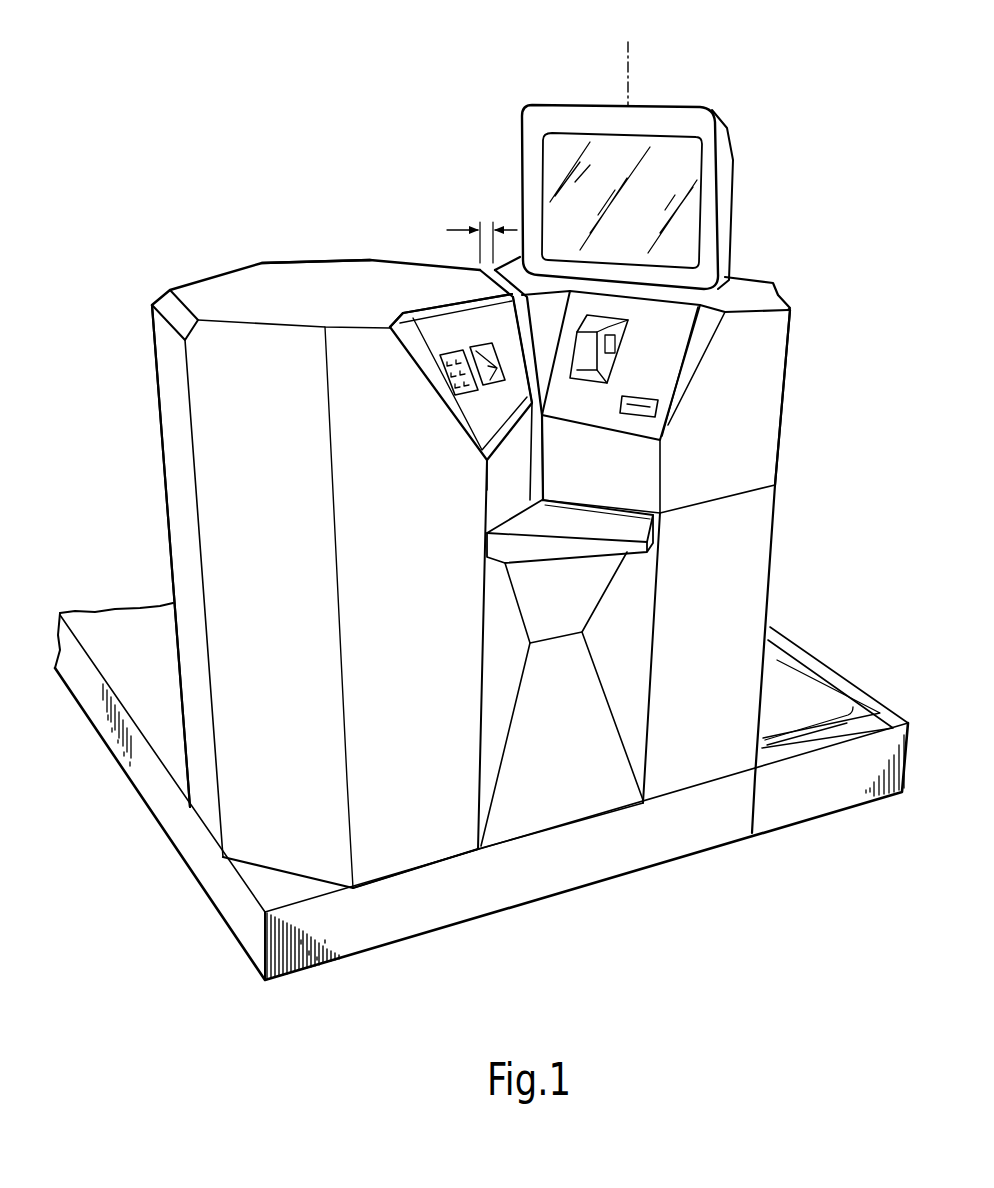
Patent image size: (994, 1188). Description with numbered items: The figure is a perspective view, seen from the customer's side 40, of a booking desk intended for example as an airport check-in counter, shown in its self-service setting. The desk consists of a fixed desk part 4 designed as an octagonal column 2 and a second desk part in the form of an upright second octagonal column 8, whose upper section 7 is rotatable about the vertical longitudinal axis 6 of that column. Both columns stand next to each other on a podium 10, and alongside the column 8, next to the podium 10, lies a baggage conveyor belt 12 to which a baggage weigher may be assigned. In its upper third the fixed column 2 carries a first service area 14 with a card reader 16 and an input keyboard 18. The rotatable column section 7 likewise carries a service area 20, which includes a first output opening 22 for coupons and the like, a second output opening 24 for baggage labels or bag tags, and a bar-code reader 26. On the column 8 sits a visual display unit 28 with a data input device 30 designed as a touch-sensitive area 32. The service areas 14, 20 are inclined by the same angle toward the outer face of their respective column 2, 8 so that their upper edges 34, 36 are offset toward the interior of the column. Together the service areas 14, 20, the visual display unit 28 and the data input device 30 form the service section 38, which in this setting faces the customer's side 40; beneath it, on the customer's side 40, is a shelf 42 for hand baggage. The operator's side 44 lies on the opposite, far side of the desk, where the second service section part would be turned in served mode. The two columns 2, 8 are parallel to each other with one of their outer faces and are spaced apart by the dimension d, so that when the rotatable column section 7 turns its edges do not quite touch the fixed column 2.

The octagonal column 2 is at (225, 291).
The fixed desk part 4 is at (313, 252).
The vertical longitudinal axis 6 is at (640, 48).
The upper section 7 is at (793, 327).
The second octagonal column 8 is at (753, 279).
The podium 10 is at (223, 897).
The baggage conveyor belt 12 is at (785, 695).
The first service area 14 is at (444, 328).
The card reader 16 is at (477, 343).
The input keyboard 18 is at (450, 378).
The service area 20 is at (673, 345).
The first output opening 22 is at (587, 378).
The second output opening 24 is at (608, 357).
The bar-code reader 26 is at (663, 411).
The visual display unit 28 is at (690, 107).
The data input device 30 is at (700, 172).
The touch-sensitive area 32 is at (570, 148).
The upper edge 34 is at (417, 308).
The upper edge 36 is at (680, 313).
The service section 38 is at (498, 165).
The customer's side 40 is at (634, 822).
The shelf 42 is at (569, 543).
The operator's side 44 is at (148, 443).
The dimension d is at (483, 226).